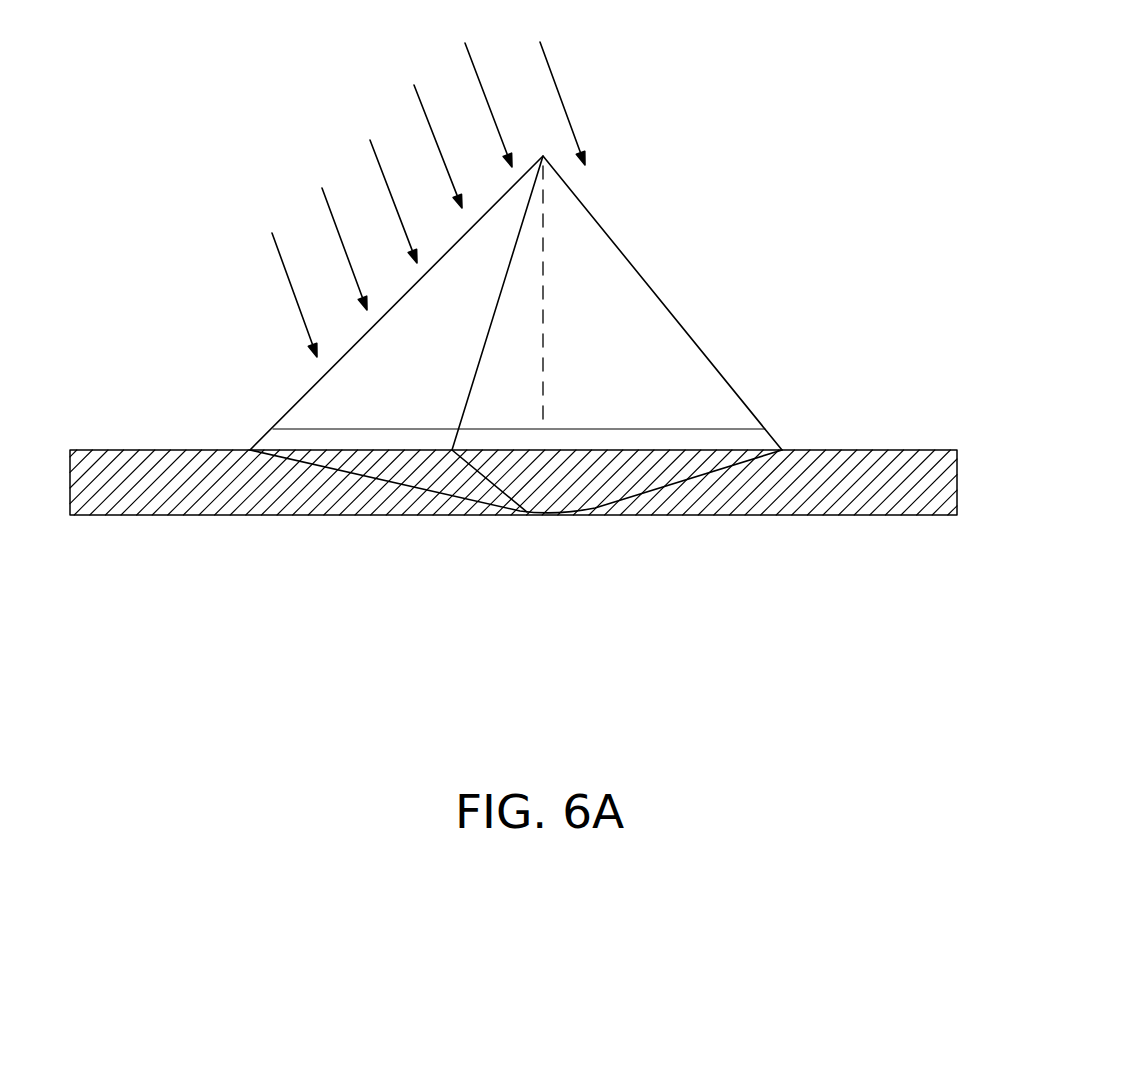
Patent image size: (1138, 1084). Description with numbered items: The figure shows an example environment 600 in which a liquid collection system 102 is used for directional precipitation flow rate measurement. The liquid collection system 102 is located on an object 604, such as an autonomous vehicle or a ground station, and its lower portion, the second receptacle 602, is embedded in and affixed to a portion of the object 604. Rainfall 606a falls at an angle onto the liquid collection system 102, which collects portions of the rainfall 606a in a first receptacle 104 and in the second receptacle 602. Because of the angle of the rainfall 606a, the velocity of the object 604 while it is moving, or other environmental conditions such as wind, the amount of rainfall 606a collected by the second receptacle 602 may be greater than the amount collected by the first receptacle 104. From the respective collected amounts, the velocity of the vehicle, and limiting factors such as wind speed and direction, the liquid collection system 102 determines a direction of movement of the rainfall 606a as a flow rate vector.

The example environment 600 is at (1004, 727).
The liquid collection system 102 is at (593, 213).
The first receptacle 104 is at (570, 348).
The second receptacle 602 is at (385, 349).
The object 604 is at (920, 452).
The rainfall 606a is at (562, 95).